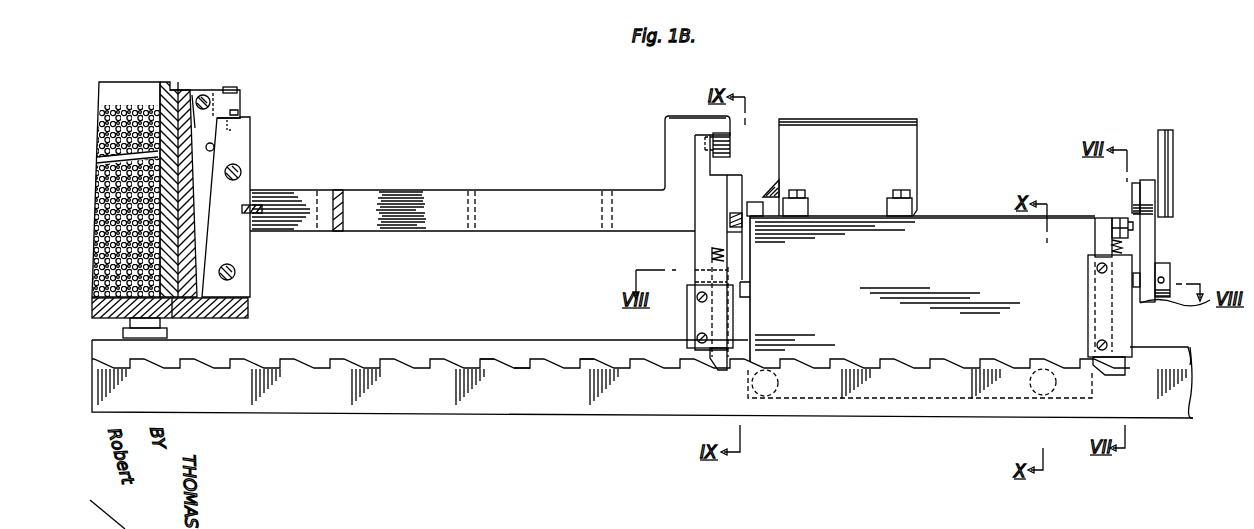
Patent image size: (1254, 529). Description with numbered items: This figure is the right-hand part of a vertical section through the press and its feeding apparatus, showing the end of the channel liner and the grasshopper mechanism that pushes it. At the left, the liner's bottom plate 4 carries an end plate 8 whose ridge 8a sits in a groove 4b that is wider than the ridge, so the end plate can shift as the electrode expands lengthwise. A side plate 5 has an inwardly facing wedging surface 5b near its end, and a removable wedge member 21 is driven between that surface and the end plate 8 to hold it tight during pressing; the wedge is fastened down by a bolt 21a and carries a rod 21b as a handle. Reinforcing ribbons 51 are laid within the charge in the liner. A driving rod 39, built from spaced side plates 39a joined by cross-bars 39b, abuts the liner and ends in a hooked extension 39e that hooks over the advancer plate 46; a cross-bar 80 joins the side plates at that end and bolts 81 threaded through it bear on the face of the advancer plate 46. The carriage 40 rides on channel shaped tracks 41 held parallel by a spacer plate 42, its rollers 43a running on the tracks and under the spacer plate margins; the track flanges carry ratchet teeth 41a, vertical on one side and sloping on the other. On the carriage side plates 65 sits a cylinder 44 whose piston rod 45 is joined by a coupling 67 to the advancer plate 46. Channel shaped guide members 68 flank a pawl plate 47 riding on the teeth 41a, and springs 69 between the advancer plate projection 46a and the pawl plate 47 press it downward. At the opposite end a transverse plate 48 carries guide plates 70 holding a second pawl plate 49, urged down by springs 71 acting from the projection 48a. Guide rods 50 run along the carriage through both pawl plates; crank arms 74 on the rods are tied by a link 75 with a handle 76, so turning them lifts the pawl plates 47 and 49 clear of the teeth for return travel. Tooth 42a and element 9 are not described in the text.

The bottom plate 4 is at (250, 309).
The grooves 4b is at (180, 304).
The side plate 5 is at (249, 160).
The wedging surface 5b is at (213, 146).
The end plate 8 is at (168, 82).
The ridge 8a is at (199, 128).
The screw 9 is at (226, 264).
The wedge member 21 is at (207, 99).
The bolt 21a is at (243, 92).
The rod 21b is at (238, 88).
The driving rod 39 is at (622, 200).
The side plates 39a is at (383, 231).
The cross-bar 39b is at (353, 191).
The hooked extension 39e is at (682, 119).
The carriage 40 is at (960, 126).
The track 41 is at (512, 404).
The ratchet teeth 41a is at (488, 362).
The spacer plate 42 is at (591, 352).
The rack tooth 42a is at (514, 363).
The roller 43a is at (772, 398).
The cylinder 44 is at (860, 130).
The piston rod 45 is at (757, 200).
The advancer plate 46 is at (700, 261).
The projection 46a is at (722, 250).
The pawl plate 47 is at (712, 303).
The transverse plate 48 is at (1104, 238).
The projection 48a is at (1129, 225).
The second pawl plate 49 is at (1132, 320).
The guide rod 50 is at (742, 283).
The reinforcing ribbons 51 is at (129, 102).
The side plate 65 is at (964, 229).
The coupling 67 is at (720, 237).
The guide member 68 is at (690, 323).
The spring 69 is at (727, 262).
The guide plate 70 is at (1181, 315).
The spring 71 is at (1123, 249).
The crank arm 74 is at (1150, 246).
The link 75 is at (1138, 184).
The handle 76 is at (1170, 161).
The cross-bar 80 is at (743, 135).
The bolt 81 is at (731, 138).